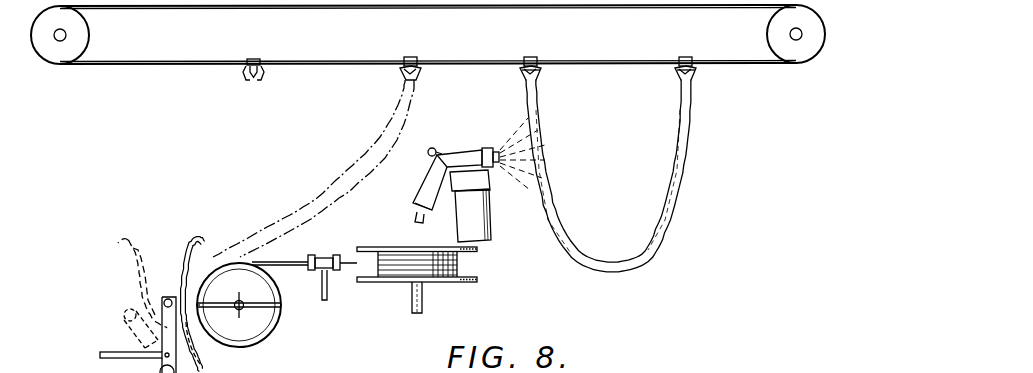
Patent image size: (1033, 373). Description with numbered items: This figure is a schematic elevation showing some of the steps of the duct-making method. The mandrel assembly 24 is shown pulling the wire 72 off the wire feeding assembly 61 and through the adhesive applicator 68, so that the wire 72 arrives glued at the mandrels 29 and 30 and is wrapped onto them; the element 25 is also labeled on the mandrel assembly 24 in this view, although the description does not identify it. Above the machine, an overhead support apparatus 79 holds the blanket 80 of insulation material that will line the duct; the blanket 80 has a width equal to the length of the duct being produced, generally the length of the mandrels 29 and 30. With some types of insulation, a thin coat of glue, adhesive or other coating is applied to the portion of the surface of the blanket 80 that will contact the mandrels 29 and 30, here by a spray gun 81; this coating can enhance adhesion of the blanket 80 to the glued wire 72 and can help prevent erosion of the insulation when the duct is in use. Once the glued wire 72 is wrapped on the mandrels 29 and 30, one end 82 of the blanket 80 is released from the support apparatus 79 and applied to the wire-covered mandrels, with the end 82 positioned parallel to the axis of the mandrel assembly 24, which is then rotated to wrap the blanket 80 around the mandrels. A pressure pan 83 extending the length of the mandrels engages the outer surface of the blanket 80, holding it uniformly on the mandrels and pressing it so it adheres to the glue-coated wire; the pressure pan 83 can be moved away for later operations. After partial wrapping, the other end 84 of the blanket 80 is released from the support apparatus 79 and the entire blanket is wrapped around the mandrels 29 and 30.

The overhead support apparatus 79 is at (172, 65).
The blanket 80 is at (332, 192).
The end 82 is at (523, 98).
The other end 84 is at (687, 86).
The pressure pan 83 is at (130, 239).
The adhesive applicator 68 is at (323, 254).
The wire 72 is at (348, 262).
The axle 25 is at (248, 282).
The mandrel 29 is at (273, 284).
The spray gun 81 is at (477, 221).
The mandrel 30 is at (267, 320).
The mandrel assembly 24 is at (262, 336).
The wire feeding assembly 61 is at (444, 281).